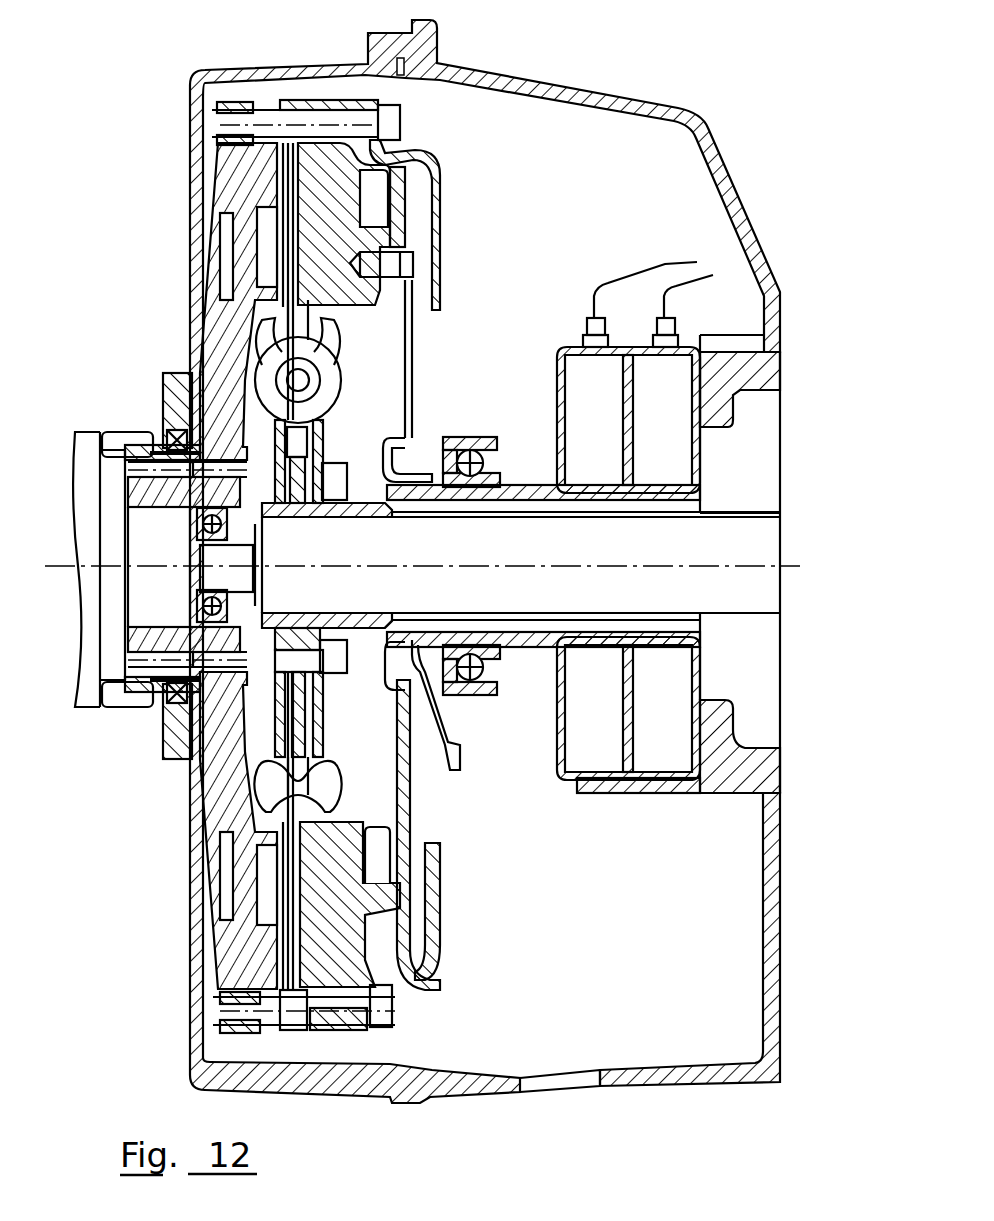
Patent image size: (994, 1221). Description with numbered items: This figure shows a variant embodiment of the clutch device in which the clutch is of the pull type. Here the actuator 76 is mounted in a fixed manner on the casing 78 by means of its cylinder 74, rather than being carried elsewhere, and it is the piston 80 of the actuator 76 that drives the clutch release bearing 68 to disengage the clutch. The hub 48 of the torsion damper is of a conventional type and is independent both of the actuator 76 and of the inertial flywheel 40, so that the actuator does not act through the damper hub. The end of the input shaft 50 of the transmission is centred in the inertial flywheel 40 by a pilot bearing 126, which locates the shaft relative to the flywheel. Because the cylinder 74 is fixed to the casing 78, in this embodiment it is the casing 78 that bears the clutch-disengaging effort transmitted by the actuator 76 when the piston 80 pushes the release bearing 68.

The inertial flywheel 40 is at (238, 310).
The hub of the torsion damper 48 is at (372, 503).
The input shaft of the transmission 50 is at (210, 578).
The clutch release bearing 68 is at (460, 438).
The cylinder 74 is at (556, 388).
The actuator 76 is at (556, 338).
The casing 78 is at (718, 197).
The piston 80 is at (616, 450).
The pilot bearing 126 is at (195, 540).